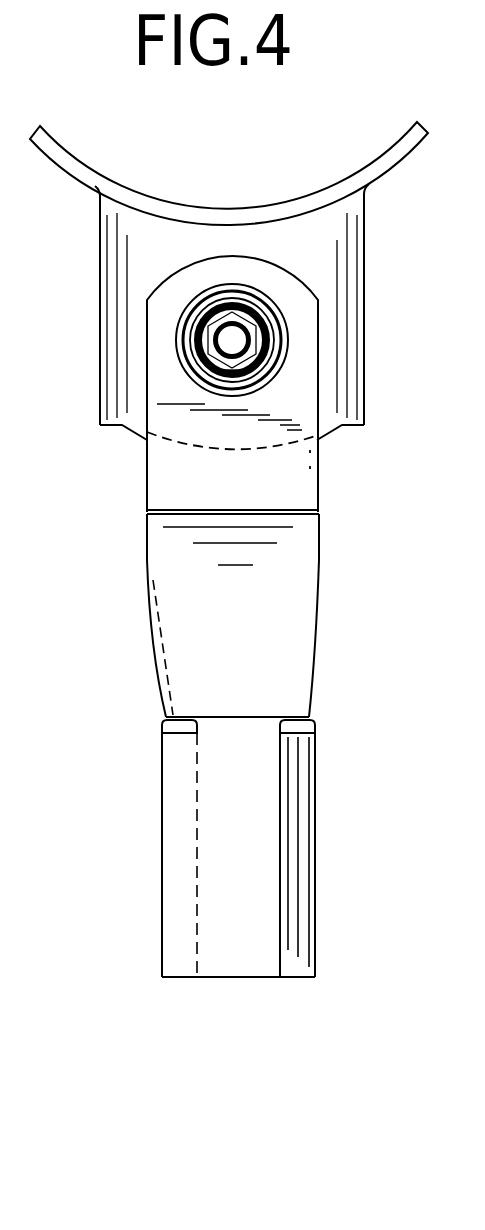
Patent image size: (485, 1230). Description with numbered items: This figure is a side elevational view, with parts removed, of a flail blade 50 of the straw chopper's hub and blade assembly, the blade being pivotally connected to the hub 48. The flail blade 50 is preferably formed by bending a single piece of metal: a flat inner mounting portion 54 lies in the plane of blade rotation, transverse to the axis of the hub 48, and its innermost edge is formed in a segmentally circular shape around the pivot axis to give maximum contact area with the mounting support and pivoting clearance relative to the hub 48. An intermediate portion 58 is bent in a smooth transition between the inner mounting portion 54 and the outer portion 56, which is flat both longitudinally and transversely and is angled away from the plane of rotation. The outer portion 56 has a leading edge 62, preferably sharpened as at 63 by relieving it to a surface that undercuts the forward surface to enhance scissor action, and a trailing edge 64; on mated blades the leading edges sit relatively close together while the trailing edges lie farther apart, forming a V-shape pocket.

The hub 48 is at (392, 152).
The flail blade 50 is at (214, 675).
The inner mounting portion 54 is at (213, 462).
The outer portion 56 is at (253, 825).
The intermediate portion 58 is at (270, 652).
The leading edge 62 is at (317, 940).
The sharpened edge 63 is at (290, 865).
The trailing edge 64 is at (162, 850).